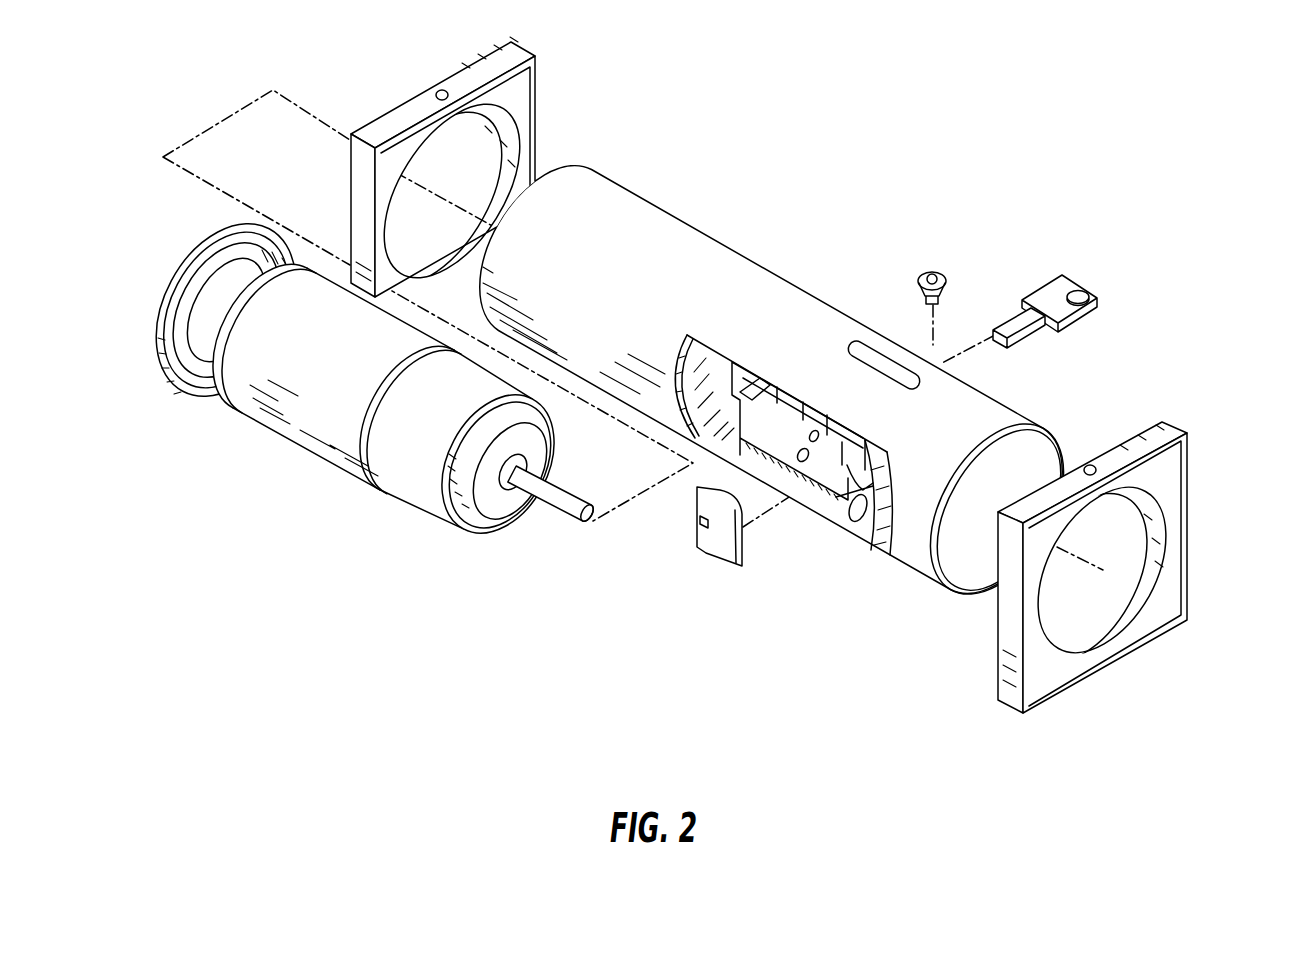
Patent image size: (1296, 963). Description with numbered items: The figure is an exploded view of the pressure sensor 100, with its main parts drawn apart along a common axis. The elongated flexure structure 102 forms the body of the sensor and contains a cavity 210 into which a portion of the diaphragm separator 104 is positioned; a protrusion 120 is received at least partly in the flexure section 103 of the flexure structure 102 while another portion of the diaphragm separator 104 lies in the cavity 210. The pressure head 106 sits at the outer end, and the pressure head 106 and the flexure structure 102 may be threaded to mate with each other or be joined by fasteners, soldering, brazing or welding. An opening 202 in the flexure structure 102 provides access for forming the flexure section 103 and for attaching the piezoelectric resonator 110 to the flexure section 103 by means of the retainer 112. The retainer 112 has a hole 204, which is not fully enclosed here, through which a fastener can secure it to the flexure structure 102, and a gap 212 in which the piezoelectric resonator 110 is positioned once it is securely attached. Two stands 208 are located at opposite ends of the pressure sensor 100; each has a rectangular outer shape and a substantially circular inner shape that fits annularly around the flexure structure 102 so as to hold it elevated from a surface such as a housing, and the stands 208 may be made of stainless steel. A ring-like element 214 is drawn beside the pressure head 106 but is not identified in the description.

The pressure sensor 100 is at (937, 115).
The flexure structure 102 is at (785, 391).
The flexure section 103 is at (738, 452).
The diaphragm separator 104 is at (343, 409).
The pressure head 106 is at (242, 328).
The piezoelectric resonator 110 is at (723, 547).
The retainer 112 is at (1036, 298).
The protrusion 120 is at (550, 493).
The opening 202 is at (868, 358).
The hole 204 is at (1077, 297).
The stands 208 is at (537, 130).
The cavity 210 is at (703, 363).
The gap 212 is at (1046, 289).
The flange ring 214 is at (200, 242).